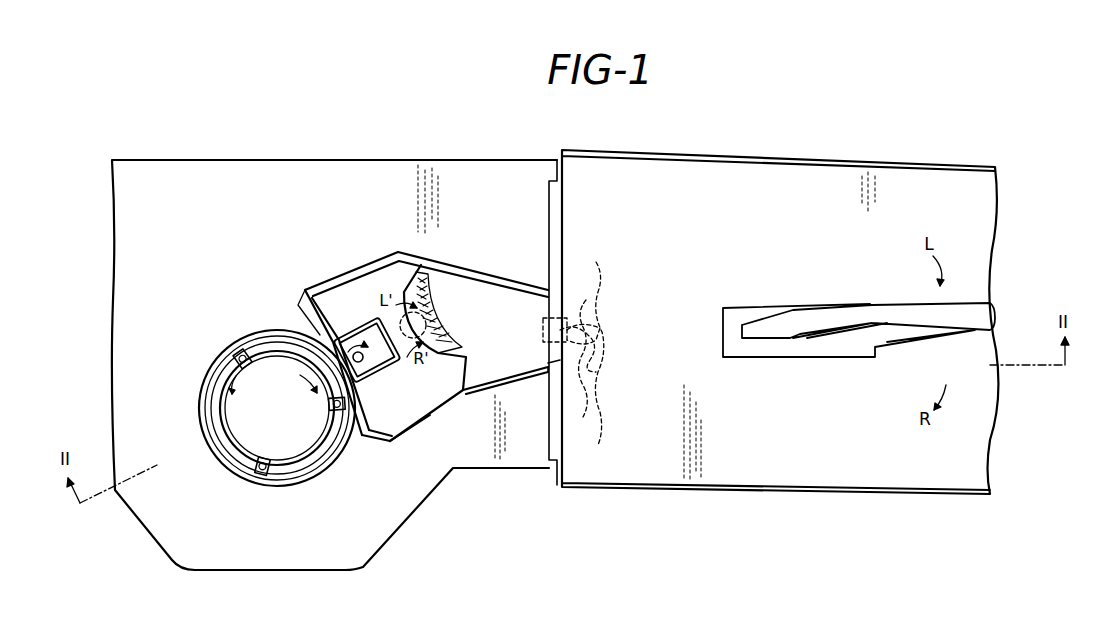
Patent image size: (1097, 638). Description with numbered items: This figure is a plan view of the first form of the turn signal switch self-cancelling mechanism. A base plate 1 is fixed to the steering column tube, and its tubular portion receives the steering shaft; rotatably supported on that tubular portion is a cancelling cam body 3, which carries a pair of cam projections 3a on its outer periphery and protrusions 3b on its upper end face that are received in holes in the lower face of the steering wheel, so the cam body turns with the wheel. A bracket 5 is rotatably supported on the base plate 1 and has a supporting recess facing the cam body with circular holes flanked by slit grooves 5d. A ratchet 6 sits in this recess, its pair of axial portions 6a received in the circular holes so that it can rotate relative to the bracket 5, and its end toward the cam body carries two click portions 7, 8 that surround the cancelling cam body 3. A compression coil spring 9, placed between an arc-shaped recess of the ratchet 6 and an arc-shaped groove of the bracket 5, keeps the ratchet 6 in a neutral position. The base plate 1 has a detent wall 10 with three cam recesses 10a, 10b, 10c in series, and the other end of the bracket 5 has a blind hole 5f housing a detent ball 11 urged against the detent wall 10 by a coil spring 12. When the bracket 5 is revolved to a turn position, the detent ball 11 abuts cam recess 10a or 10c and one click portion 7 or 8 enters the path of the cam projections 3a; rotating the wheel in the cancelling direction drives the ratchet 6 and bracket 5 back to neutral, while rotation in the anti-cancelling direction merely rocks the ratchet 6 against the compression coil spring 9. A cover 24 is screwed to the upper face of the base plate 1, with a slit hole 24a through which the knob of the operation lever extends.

The base plate 1 is at (372, 172).
The cancelling cam body 3 is at (263, 332).
The cam projections 3a is at (322, 462).
The protrusions 3b is at (266, 478).
The bracket 5 is at (488, 292).
The slit grooves 5d is at (404, 382).
The blind hole 5f is at (560, 349).
The ratchet 6 is at (379, 445).
The axial portions 6a is at (360, 362).
The click portion 7 is at (299, 326).
The click portion 8 is at (361, 437).
The compression coil spring 9 is at (432, 323).
The detent wall 10 is at (575, 322).
The cam recess 10a is at (596, 262).
The cam recess 10b is at (586, 300).
The cam recess 10c is at (603, 372).
The detent ball 11 is at (592, 370).
The coil spring 12 is at (585, 318).
The cover 24 is at (699, 177).
The slit hole 24a is at (764, 350).